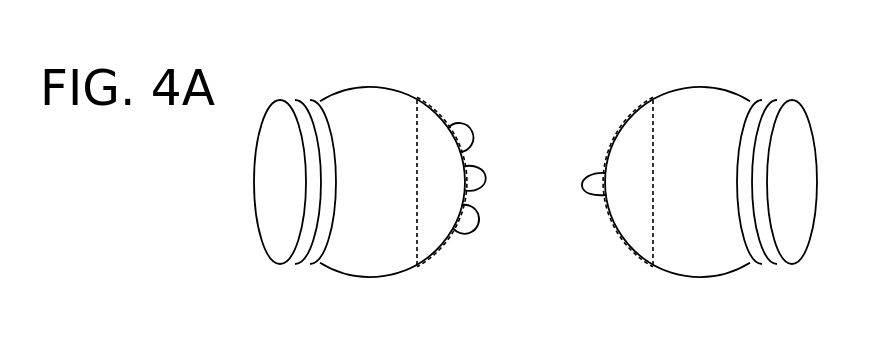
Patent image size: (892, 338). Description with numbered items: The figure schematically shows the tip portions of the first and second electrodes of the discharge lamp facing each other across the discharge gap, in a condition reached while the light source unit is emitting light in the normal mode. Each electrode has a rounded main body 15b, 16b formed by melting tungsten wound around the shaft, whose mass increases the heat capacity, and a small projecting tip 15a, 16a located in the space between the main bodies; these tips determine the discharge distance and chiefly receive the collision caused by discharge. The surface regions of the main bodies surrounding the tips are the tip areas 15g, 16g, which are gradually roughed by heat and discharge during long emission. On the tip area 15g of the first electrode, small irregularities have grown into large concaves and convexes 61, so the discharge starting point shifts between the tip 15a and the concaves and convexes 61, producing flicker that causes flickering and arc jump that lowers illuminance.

The tip 15a is at (487, 167).
The main body 15b is at (392, 88).
The tip area 15g is at (420, 97).
The concaves and convexes 61 is at (468, 128).
The tip 16a is at (605, 172).
The main body 16b is at (686, 86).
The tip area 16g is at (645, 99).